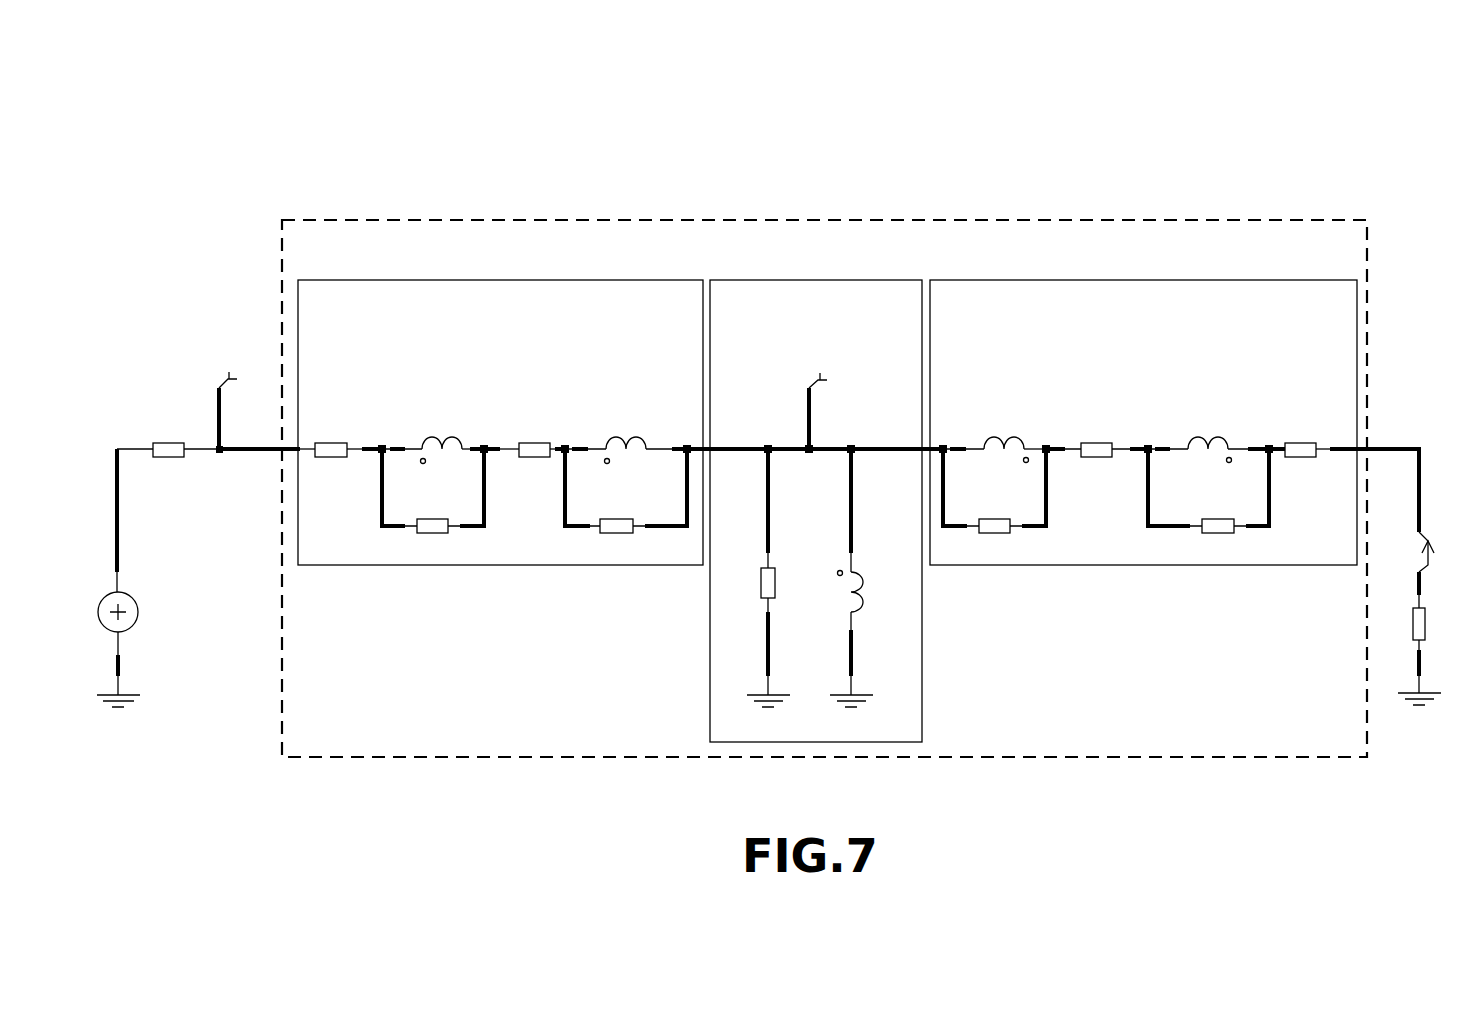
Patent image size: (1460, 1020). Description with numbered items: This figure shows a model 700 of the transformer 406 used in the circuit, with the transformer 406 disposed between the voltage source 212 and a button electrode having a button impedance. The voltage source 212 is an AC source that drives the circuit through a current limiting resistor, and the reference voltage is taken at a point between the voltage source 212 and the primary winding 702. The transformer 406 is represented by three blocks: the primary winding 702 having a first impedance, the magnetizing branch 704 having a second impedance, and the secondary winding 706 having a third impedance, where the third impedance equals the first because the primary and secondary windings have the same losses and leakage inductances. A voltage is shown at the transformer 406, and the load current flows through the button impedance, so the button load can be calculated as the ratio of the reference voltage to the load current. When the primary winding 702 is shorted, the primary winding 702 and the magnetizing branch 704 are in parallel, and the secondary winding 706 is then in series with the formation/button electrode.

The equivalent circuit model of ultrasonic transducer system 700 is at (180, 125).
The transformer 406 is at (846, 158).
The primary winding 702 is at (512, 280).
The magnetizing branch 704 is at (828, 280).
The secondary winding 706 is at (1143, 280).
The voltage source 212 is at (130, 628).